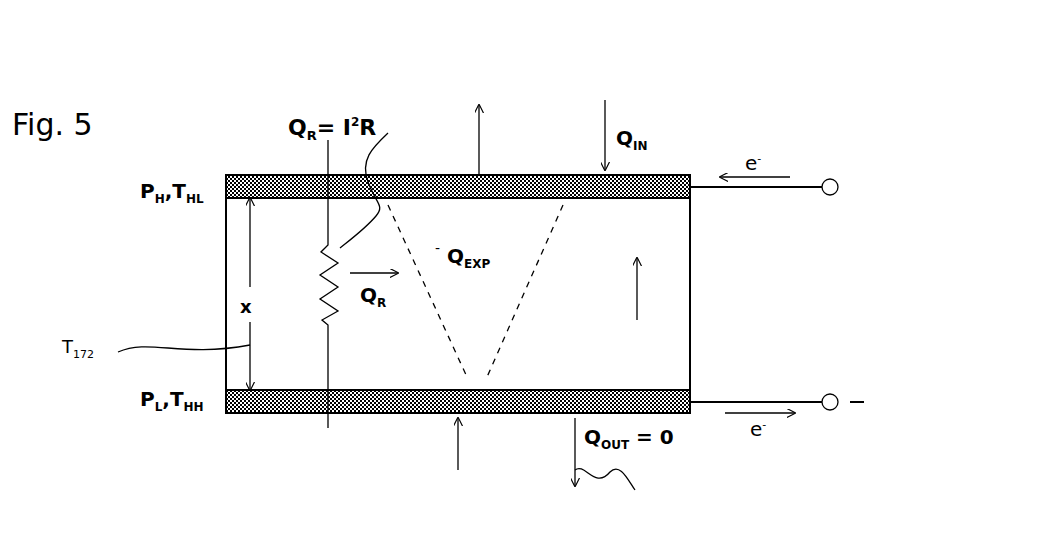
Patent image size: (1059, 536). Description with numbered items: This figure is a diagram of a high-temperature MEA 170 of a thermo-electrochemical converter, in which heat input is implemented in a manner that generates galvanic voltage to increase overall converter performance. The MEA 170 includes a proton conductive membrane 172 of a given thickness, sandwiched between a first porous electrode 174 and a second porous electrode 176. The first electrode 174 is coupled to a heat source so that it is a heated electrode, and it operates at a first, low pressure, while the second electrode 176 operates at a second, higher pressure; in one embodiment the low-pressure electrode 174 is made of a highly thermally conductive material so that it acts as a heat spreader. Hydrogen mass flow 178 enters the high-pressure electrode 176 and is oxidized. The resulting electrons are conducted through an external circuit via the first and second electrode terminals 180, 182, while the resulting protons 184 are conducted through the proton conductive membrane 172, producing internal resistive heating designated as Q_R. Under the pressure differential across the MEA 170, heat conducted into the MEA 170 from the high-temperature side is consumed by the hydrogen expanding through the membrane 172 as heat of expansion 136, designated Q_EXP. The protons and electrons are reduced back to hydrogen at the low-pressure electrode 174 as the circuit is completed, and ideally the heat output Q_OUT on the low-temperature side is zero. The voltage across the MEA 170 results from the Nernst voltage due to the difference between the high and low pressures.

The high-temperature MEA 170 is at (826, 58).
The proton conductive membrane 172 is at (226, 292).
The first porous electrode 174 is at (258, 175).
The second porous electrode 176 is at (278, 413).
The hydrogen mass flow 178 is at (478, 130).
The first electrode terminal 180 is at (836, 172).
The second electrode terminal 182 is at (845, 408).
The protons 184 is at (637, 293).
The heat of expansion 136 is at (510, 330).